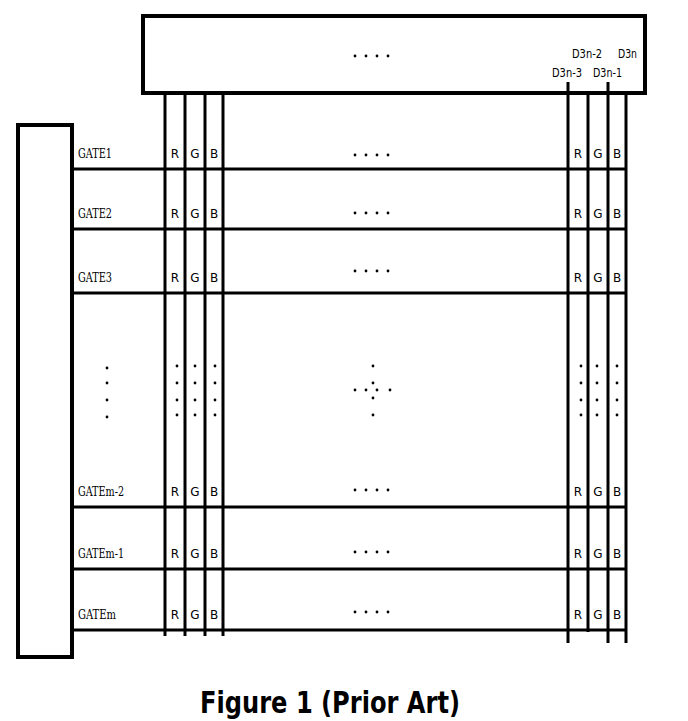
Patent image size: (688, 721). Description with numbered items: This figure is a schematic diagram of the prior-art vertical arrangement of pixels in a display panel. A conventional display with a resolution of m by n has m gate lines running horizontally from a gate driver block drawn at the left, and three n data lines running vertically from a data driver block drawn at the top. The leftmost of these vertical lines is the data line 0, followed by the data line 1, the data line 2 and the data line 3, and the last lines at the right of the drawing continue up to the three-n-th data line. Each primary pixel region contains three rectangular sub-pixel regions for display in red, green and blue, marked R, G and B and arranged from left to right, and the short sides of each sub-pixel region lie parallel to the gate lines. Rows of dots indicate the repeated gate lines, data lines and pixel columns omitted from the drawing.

The data line D0 0 is at (163, 354).
The data line D1 1 is at (185, 344).
The data line D2 2 is at (204, 354).
The data line D3 3 is at (223, 344).